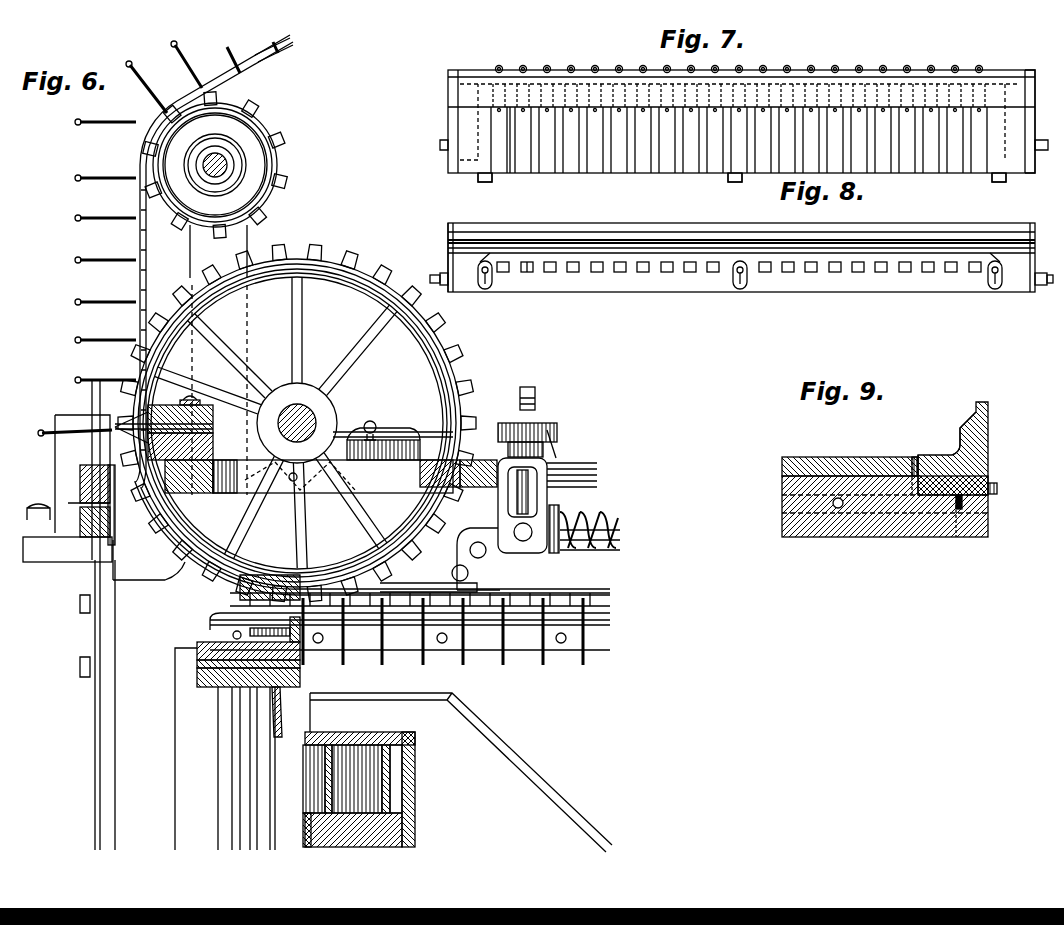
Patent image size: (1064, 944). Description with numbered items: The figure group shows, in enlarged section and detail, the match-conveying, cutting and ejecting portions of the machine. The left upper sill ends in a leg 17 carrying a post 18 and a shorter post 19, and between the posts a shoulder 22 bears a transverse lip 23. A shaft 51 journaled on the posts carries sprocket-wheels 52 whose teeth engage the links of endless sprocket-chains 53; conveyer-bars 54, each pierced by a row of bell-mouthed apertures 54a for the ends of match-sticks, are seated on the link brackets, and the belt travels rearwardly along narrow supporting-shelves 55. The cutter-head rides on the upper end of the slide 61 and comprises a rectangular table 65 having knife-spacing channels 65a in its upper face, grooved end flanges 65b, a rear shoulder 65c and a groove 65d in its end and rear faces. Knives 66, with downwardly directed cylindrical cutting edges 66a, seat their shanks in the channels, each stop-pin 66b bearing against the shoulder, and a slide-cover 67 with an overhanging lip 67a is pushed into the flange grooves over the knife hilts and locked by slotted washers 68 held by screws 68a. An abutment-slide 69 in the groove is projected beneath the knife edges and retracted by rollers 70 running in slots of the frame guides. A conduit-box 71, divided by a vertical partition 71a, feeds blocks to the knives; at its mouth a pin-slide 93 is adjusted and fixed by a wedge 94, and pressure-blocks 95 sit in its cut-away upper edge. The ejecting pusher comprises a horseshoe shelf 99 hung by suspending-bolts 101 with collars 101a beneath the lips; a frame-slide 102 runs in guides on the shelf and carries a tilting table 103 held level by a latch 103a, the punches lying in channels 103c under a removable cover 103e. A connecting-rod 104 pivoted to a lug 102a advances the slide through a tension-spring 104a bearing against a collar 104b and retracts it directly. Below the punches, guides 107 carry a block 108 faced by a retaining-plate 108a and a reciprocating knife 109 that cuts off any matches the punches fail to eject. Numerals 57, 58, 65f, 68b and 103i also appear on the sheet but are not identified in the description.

In FIG. 6, the leg 17 is at (95, 775).
In FIG. 6, the post 18 is at (200, 260).
In FIG. 6, the shorter post 19 is at (300, 522).
In FIG. 6, the shoulder 22 is at (560, 448).
In FIG. 6, the lip 23 is at (500, 420).
In FIG. 6, the shaft 51 is at (300, 410).
In FIG. 6, the sprocket-wheels 52 is at (330, 258).
In FIG. 6, the sprocket-chains 53 is at (275, 58).
In FIG. 6, the conveyer-bars 54 is at (130, 225).
In FIG. 6, the apertures 54a is at (215, 598).
In FIG. 6, the supporting-shelves 55 is at (515, 640).
In FIG. 6, the shaft of sprocket 57 is at (225, 160).
In FIG. 6, the small sprocket 58 is at (260, 176).
In FIG. 6, the slide 61 is at (235, 775).
In FIG. 6, the table 65 is at (205, 688).
In FIG. 7, the table 65 is at (648, 170).
In FIG. 8, the table 65 is at (636, 280).
In FIG. 9, the table 65 is at (838, 528).
In FIG. 7, the knife-spacing channels 65a is at (526, 170).
In FIG. 8, the knife-spacing channels 65a is at (530, 273).
In FIG. 7, the flanges 65b is at (1000, 182).
In FIG. 8, the flanges 65b is at (448, 245).
In FIG. 9, the shoulder 65c is at (956, 445).
In FIG. 9, the groove 65d is at (978, 520).
In FIG. 6, the bar extension 65f is at (280, 740).
In FIG. 7, the knives 66 is at (596, 67).
In FIG. 8, the knives 66 is at (597, 273).
In FIG. 9, the cutting edges 66a is at (995, 483).
In FIG. 9, the stop-pin 66b is at (900, 455).
In FIG. 8, the slide-cover 67 is at (898, 262).
In FIG. 9, the slide-cover 67 is at (805, 465).
In FIG. 9, the overhanging lip 67a is at (916, 455).
In FIG. 8, the slotted washers 68 is at (740, 289).
In FIG. 7, the bolts or screws 68a is at (484, 182).
In FIG. 8, the bolts or screws 68a is at (747, 280).
In FIG. 7, the middle foot 68b is at (733, 182).
In FIG. 6, the abutment-slide 69 is at (300, 672).
In FIG. 8, the abutment-slide 69 is at (448, 280).
In FIG. 9, the abutment-slide 69 is at (965, 505).
In FIG. 8, the wheels or rollers 70 is at (444, 272).
In FIG. 6, the conduit-box 71 is at (373, 792).
In FIG. 6, the vertical partition 71a is at (320, 798).
In FIG. 6, the pin-slide 93 is at (292, 835).
In FIG. 6, the wedge 94 is at (320, 835).
In FIG. 6, the pressure-blocks 95 is at (310, 740).
In FIG. 6, the shelf 99 is at (598, 470).
In FIG. 6, the suspending-bolts 101 is at (535, 405).
In FIG. 6, the collars 101a is at (547, 440).
In FIG. 6, the frame-slide 102 is at (490, 455).
In FIG. 6, the lug 102a is at (510, 555).
In FIG. 6, the tilting table 103 is at (392, 440).
In FIG. 6, the latch or button 103a is at (185, 403).
In FIG. 6, the channels 103c is at (183, 449).
In FIG. 6, the cover 103e is at (208, 398).
In FIG. 6, the bearing bar 103i is at (225, 470).
In FIG. 6, the connecting-rod 104 is at (606, 552).
In FIG. 6, the tension-spring 104a is at (612, 515).
In FIG. 6, the collar 104b is at (560, 515).
In FIG. 6, the guides 107 is at (75, 452).
In FIG. 6, the block 108 is at (80, 498).
In FIG. 6, the retaining-plate 108a is at (75, 528).
In FIG. 6, the saw or knife 109 is at (120, 540).